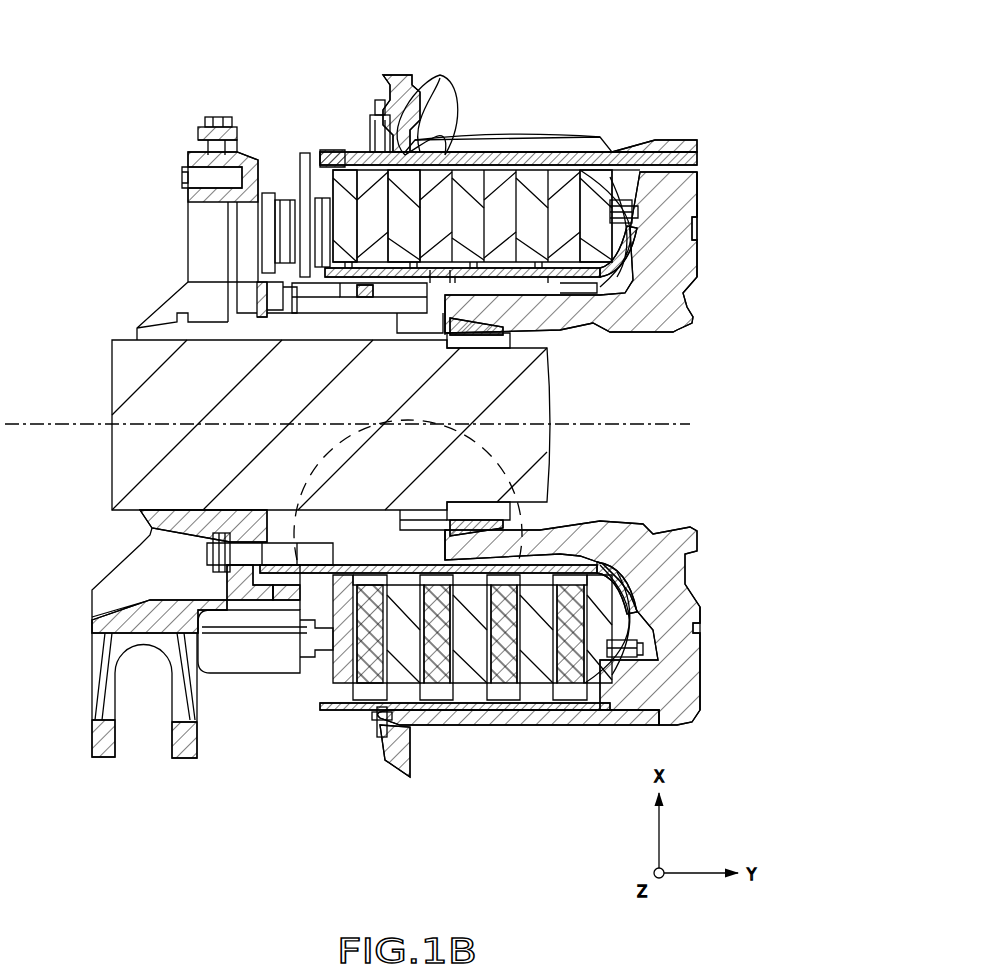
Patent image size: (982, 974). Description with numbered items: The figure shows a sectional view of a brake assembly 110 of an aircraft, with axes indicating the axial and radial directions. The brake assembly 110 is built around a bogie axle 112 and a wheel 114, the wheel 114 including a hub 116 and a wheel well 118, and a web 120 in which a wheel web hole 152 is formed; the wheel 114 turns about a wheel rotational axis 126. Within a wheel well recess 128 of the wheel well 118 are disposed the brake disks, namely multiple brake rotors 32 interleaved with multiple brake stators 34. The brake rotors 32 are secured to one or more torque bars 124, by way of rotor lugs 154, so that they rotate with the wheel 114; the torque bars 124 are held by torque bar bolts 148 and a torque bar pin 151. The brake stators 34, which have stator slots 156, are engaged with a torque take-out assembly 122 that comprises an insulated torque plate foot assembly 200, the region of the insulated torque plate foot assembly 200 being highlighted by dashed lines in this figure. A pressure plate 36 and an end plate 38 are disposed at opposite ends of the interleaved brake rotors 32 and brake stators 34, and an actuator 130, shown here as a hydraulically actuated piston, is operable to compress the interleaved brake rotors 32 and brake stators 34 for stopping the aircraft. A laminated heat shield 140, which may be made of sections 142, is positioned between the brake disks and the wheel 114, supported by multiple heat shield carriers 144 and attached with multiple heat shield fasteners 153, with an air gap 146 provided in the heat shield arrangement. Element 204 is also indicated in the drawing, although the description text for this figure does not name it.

The brake assembly 110 is at (705, 78).
The bogie axle 112 is at (100, 385).
The wheel 114 is at (565, 115).
The hub 116 is at (522, 302).
The wheel well 118 is at (680, 148).
The web 120 is at (680, 605).
The torque take-out assembly 122 is at (350, 312).
The torque bars 124 is at (330, 157).
The wheel rotational axis 126 is at (610, 424).
The wheel well recess 128 is at (668, 243).
The actuator 130 is at (245, 700).
The laminated heat shield 140 is at (335, 740).
The sections 142 is at (500, 140).
The heat shield carriers 144 is at (405, 762).
The air gap 146 is at (410, 95).
The torque bar bolts 148 is at (372, 140).
The torque bar pin 151 is at (612, 162).
The wheel web hole 152 is at (705, 180).
The heat shield fasteners 153 is at (383, 742).
The rotor lugs 154 is at (440, 150).
The stator slots 156 is at (380, 300).
The insulated torque plate foot assembly 200 is at (424, 510).
The rotor flange 204 is at (410, 527).
The brake rotors 32 is at (472, 219).
The brake stators 34 is at (464, 216).
The pressure plate 36 is at (345, 216).
The end plate 38 is at (609, 228).